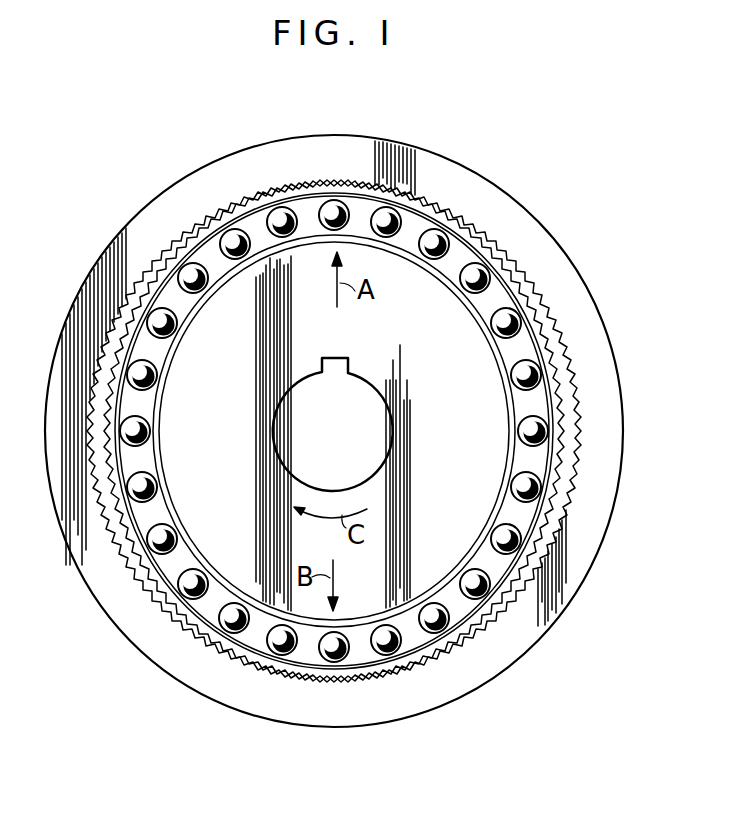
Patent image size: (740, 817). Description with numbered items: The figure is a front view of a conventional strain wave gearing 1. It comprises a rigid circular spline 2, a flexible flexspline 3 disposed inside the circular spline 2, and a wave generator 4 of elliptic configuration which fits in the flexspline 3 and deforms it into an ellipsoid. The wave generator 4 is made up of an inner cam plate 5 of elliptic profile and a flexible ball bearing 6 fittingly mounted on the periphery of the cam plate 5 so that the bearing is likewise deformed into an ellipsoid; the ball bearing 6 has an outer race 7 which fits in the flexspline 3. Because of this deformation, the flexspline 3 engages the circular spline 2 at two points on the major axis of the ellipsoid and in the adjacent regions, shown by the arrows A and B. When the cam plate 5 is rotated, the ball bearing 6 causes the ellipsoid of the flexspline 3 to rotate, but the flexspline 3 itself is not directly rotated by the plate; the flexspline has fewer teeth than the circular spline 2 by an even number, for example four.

The strain wave gearing 1 is at (584, 249).
The circular spline 2 is at (473, 188).
The flexspline 3 is at (560, 338).
The wave generator 4 is at (443, 391).
The cam plate 5 is at (180, 500).
The ball bearing 6 is at (175, 575).
The outer race 7 is at (190, 630).